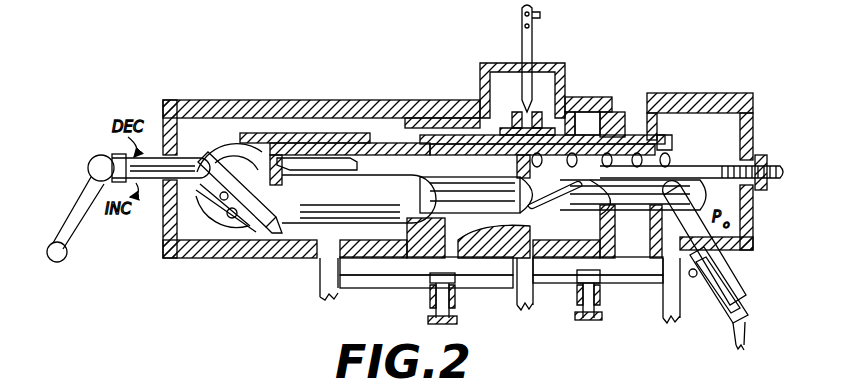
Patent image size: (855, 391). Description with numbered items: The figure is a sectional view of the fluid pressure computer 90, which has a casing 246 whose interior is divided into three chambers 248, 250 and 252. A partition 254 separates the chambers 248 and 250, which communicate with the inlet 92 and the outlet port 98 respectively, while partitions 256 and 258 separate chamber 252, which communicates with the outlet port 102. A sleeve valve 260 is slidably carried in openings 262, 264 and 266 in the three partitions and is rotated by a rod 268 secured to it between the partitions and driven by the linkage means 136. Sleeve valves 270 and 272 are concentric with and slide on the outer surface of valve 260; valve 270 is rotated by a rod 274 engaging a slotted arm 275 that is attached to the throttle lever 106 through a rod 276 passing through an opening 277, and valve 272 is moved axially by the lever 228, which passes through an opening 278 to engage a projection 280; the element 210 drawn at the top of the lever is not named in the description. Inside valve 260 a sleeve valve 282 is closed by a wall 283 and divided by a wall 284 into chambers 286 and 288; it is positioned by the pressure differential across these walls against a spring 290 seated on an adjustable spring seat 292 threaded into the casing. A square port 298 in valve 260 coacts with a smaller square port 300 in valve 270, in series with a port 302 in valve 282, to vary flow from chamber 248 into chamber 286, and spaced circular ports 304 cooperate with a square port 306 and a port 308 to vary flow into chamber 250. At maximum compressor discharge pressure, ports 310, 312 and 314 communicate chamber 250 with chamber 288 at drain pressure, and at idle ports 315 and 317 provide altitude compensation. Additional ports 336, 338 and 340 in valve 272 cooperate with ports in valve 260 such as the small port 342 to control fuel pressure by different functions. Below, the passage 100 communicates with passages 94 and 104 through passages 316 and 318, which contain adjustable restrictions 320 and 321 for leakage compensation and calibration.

The computer 90 is at (309, 98).
The inlet 92 is at (323, 247).
The passage 94 is at (318, 297).
The outlet port 98 is at (505, 278).
The passage 100 is at (545, 310).
The outlet port 102 is at (650, 272).
The passage 104 is at (692, 310).
The throttle lever 106 is at (73, 232).
The linkage means 136 is at (745, 340).
The needle valve stem 210 is at (520, 15).
The lever 228 is at (533, 57).
The casing 246 is at (348, 107).
The chamber 248 is at (202, 232).
The chamber 250 is at (600, 255).
The chamber 252 is at (752, 125).
The partition 254 is at (405, 243).
The partition 256 is at (618, 140).
The partition 258 is at (675, 97).
The sleeve valve 260 is at (636, 140).
The opening 262 is at (438, 135).
The opening 264 is at (612, 133).
The opening 266 is at (667, 133).
The rod 268 is at (695, 203).
The sleeve valve 270 is at (268, 140).
The sleeve valve 272 is at (568, 110).
The rod 274 is at (231, 219).
The slotted arm 275 is at (205, 196).
The rod 276 is at (147, 158).
The opening 277 is at (153, 158).
The opening 278 is at (562, 70).
The projection 280 is at (513, 108).
The sleeve valve 282 is at (258, 148).
The wall 283 is at (232, 150).
The wall 284 is at (507, 182).
The chamber 286 is at (432, 164).
The chamber 288 is at (614, 215).
The spring 290 is at (668, 160).
The adjustable spring seat 292 is at (672, 172).
The square port 298 is at (285, 132).
The square port 300 is at (333, 133).
The port 302 is at (293, 168).
The circular ports 304 is at (482, 130).
The square port 306 is at (510, 125).
The port 308 is at (490, 160).
The port 310 is at (573, 118).
The port 312 is at (547, 112).
The port 314 is at (585, 122).
The port 315 is at (378, 133).
The passage 316 is at (398, 285).
The port 317 is at (428, 130).
The passage 318 is at (617, 285).
The adjustable restriction 320 is at (433, 285).
The adjustable restriction 321 is at (577, 283).
The port 336 is at (392, 260).
The port 338 is at (444, 270).
The port 340 is at (554, 270).
The port 342 is at (482, 270).